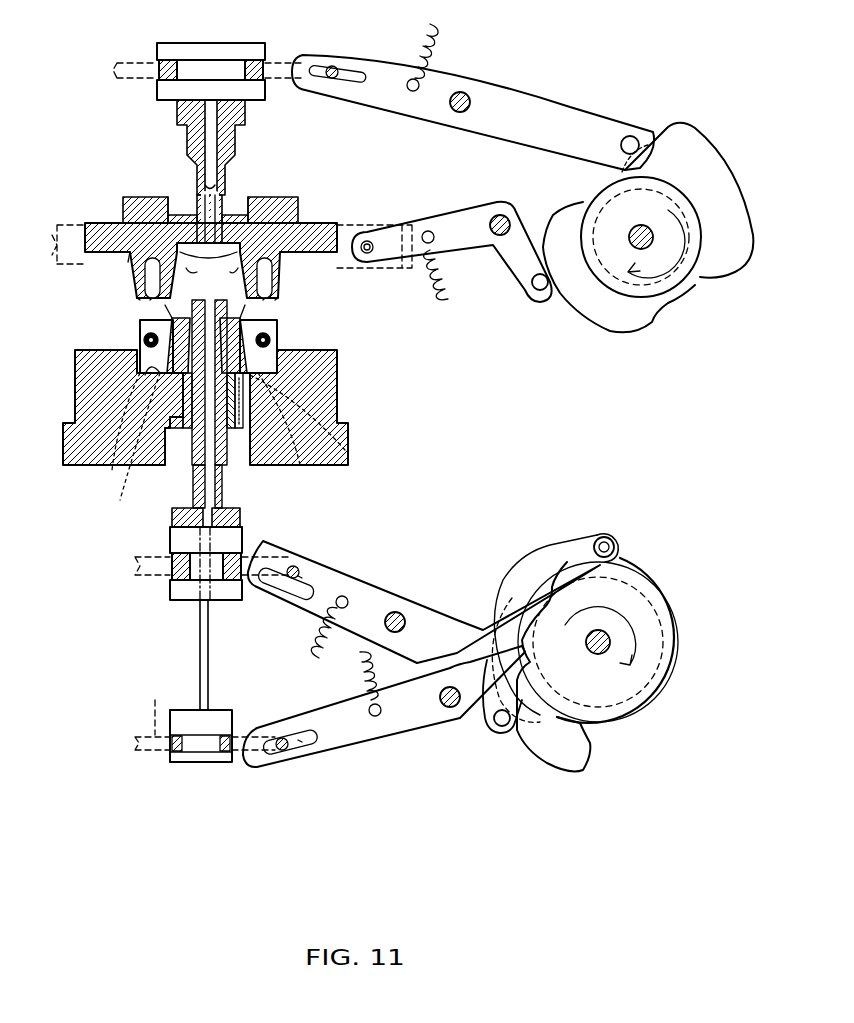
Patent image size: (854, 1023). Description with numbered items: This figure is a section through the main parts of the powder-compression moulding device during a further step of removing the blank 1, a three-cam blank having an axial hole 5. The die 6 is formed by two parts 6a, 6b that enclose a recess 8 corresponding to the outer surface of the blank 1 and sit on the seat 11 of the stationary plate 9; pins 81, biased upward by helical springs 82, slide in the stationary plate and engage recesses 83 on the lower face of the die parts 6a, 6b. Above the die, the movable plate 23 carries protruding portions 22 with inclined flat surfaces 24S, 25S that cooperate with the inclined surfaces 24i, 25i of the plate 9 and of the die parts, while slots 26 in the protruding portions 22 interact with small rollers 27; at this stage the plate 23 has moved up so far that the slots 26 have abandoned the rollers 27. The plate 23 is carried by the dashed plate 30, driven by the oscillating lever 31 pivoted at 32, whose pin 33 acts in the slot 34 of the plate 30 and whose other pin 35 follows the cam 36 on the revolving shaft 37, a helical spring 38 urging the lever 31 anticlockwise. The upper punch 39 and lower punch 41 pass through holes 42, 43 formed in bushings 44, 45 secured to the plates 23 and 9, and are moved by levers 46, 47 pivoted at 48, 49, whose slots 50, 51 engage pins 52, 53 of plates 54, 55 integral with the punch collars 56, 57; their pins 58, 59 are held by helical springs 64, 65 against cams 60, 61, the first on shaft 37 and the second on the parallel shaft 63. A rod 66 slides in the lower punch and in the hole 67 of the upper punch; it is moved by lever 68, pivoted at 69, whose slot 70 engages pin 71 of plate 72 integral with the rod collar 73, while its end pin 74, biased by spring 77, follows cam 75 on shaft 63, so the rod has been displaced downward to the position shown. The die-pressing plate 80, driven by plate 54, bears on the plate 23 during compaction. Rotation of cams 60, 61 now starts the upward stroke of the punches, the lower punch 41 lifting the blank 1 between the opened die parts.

The blank 1 is at (226, 298).
The axial hole 5 is at (246, 308).
The die 6 is at (265, 308).
The die part 6a is at (121, 436).
The die part 6b is at (290, 465).
The recess 8 is at (136, 410).
The stationary plate 9 is at (348, 440).
The seat 11 is at (78, 395).
The protruding portion 22 is at (140, 290).
The movable plate 23 is at (100, 223).
The inclined flat surface 24S is at (128, 282).
The inclined flat surface 24i is at (140, 335).
The inclined flat surface 25S is at (305, 305).
The inclined flat surface 25i is at (172, 318).
The slot 26 is at (152, 300).
The small roller 27 is at (145, 338).
The plate 30 is at (362, 224).
The oscillating lever 31 is at (466, 222).
The pivot 32 is at (500, 214).
The pin 33 is at (372, 255).
The slot 34 is at (415, 222).
The pin 35 is at (540, 292).
The cam 36 is at (612, 322).
The revolving shaft 37 is at (640, 226).
The helical spring 38 is at (448, 300).
The upper punch 39 is at (238, 210).
The lower punch 41 is at (193, 490).
The hole 42 is at (160, 197).
The hole 43 is at (165, 450).
The bushing 44 is at (190, 200).
The bushing 45 is at (180, 430).
The oscillating lever 46 is at (548, 105).
The oscillating lever 47 is at (352, 588).
The pivot 48 is at (465, 90).
The pivot 49 is at (398, 612).
The slot 50 is at (300, 75).
The slot 51 is at (303, 580).
The pin 52 is at (335, 64).
The pin 53 is at (298, 566).
The plate 54 is at (282, 60).
The plate 55 is at (152, 580).
The collar 56 is at (220, 55).
The collar 57 is at (212, 595).
The pin 58 is at (640, 136).
The pin 59 is at (500, 728).
The cam 60 is at (708, 170).
The cam 61 is at (558, 752).
The shaft 63 is at (592, 660).
The helical spring 64 is at (410, 55).
The helical spring 65 is at (318, 655).
The rod 66 is at (240, 520).
The hole 67 is at (222, 195).
The oscillating lever 68 is at (405, 738).
The pivot 69 is at (450, 708).
The slot 70 is at (303, 748).
The pin 71 is at (284, 736).
The plate 72 is at (154, 700).
The collar 73 is at (180, 770).
The end pin 74 is at (606, 537).
The cam 75 is at (652, 575).
The spring 77 is at (358, 665).
The die-pressing plate 80 is at (300, 224).
The pin 81 is at (225, 450).
The helical spring 82 is at (240, 450).
The recess 83 is at (255, 450).